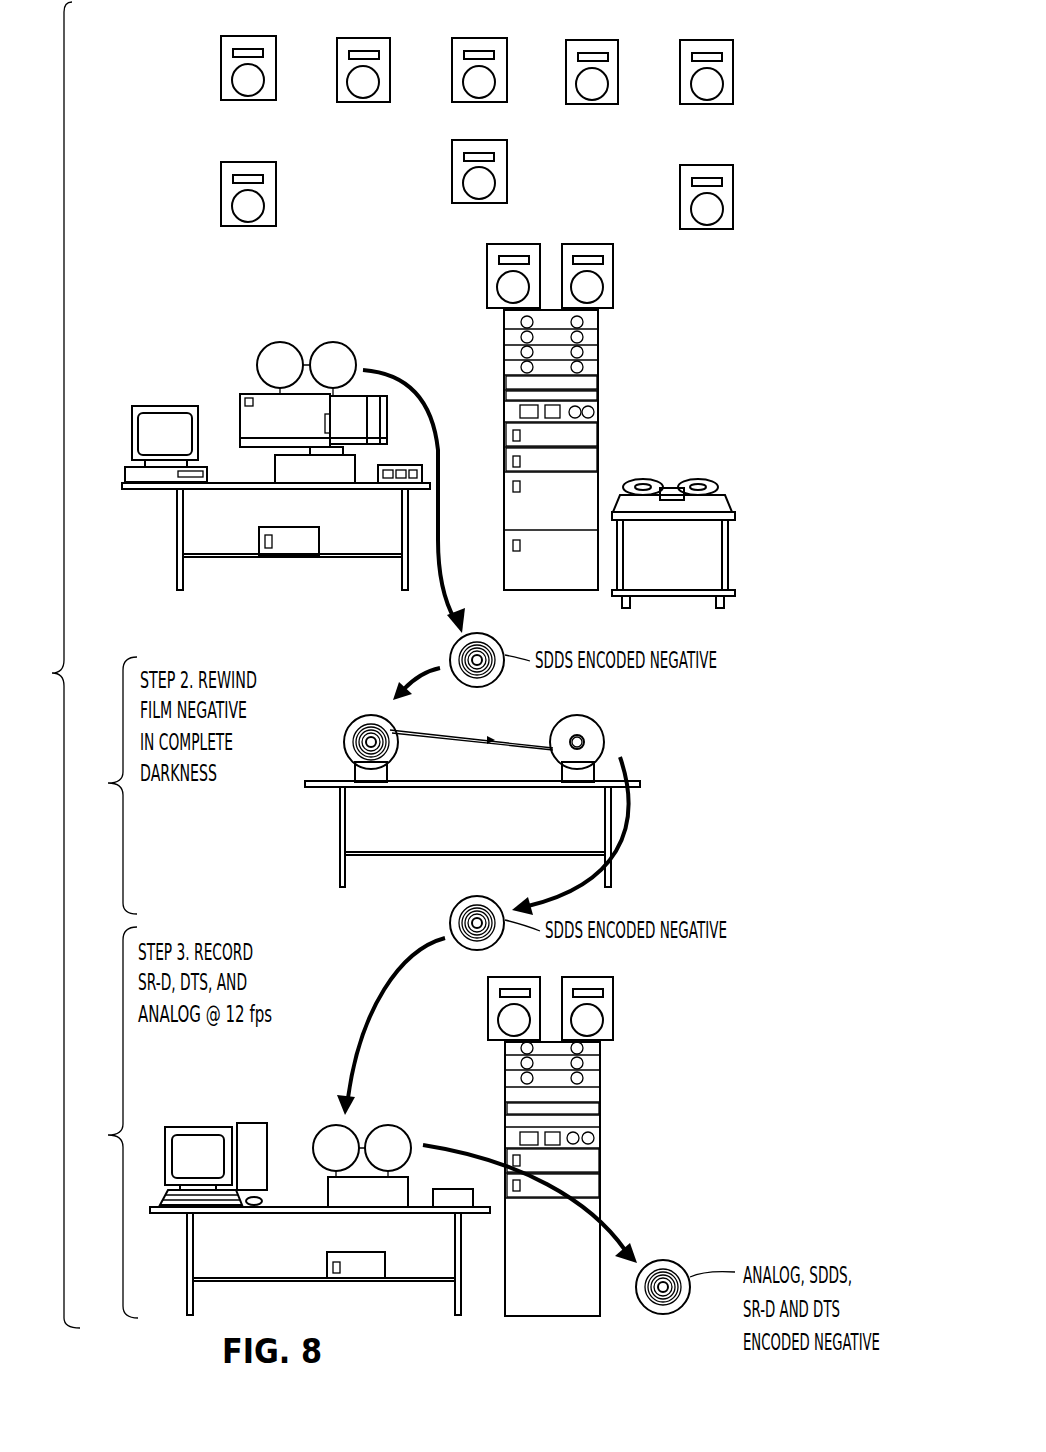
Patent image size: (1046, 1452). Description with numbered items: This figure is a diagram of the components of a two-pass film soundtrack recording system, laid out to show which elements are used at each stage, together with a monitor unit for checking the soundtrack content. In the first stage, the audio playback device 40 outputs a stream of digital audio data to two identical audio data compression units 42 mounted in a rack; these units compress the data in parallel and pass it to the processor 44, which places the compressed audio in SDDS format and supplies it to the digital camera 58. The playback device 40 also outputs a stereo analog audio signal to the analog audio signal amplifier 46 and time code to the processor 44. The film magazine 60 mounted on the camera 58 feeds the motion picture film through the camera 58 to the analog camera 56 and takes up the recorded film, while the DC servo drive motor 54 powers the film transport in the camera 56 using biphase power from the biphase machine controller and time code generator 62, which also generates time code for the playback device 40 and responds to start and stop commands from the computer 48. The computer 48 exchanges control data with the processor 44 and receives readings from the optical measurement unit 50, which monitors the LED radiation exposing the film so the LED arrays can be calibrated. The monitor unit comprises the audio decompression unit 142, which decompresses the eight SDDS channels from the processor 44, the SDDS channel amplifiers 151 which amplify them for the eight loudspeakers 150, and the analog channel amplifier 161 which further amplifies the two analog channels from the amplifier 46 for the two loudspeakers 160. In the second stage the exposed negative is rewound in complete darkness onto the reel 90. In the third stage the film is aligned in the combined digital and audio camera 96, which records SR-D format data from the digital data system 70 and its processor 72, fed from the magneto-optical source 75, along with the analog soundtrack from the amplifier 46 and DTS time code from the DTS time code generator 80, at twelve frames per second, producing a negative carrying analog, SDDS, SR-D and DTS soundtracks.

The loudspeakers 150 is at (230, 37).
The loudspeakers 160 is at (613, 256).
The SDDS channel amplifiers 151 is at (604, 316).
The analog channel amplifier 161 is at (600, 384).
The biphase machine controller and time code generator 62 is at (600, 398).
The analog audio signal amplifier 46 is at (600, 412).
The audio decompression unit 142 is at (600, 432).
The processor 44 is at (600, 462).
The audio data compression units 42 is at (503, 508).
The audio playback device 40 is at (733, 540).
The computer 48 is at (173, 405).
The film magazine 60 is at (278, 343).
The digital camera 58 is at (250, 394).
The analog camera 56 is at (273, 468).
The optical measurement unit 50 is at (375, 482).
The DC servo drive motor 54 is at (267, 557).
The combined digital and audio camera 96 is at (598, 727).
The digital data system 70 is at (205, 1126).
The reel 90 is at (333, 1125).
The processor 72 is at (600, 1161).
The DTS time code generator 80 is at (600, 1191).
The source 75 is at (428, 1205).